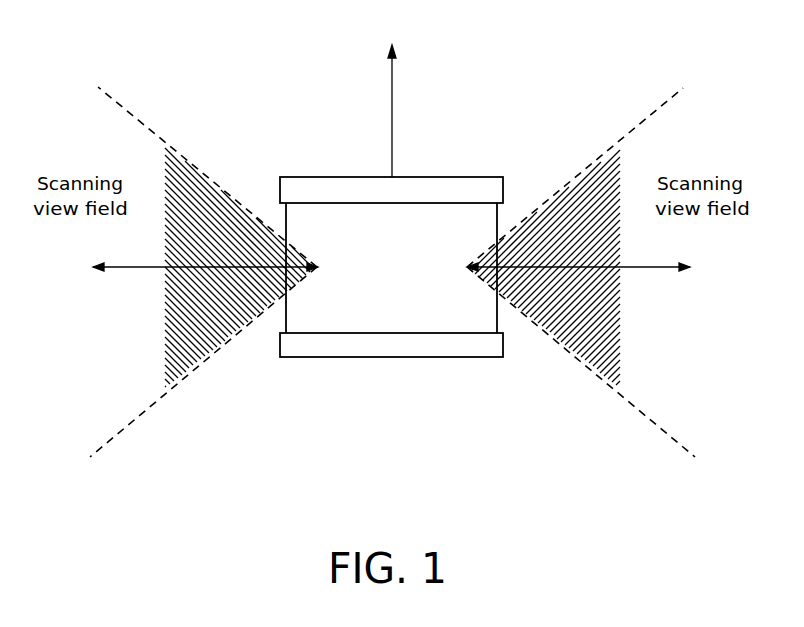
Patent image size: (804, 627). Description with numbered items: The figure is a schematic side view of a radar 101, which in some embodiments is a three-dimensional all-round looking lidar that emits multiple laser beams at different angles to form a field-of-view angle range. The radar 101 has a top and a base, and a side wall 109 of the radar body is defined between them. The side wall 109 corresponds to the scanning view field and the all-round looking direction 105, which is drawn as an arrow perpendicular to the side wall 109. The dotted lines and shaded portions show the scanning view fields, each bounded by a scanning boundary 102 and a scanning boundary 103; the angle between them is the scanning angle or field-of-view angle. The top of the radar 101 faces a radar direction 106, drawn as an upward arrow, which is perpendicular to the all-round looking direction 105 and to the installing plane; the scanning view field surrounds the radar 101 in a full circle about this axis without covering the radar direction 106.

The radar 101 is at (376, 281).
The scanning boundary 102 is at (661, 101).
The scanning boundary 103 is at (675, 455).
The all-round looking direction 105 is at (672, 272).
The radar direction 106 is at (398, 74).
The side wall 109 is at (500, 319).